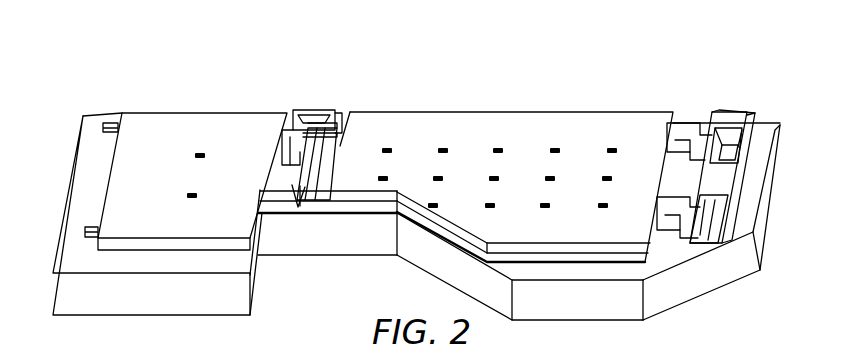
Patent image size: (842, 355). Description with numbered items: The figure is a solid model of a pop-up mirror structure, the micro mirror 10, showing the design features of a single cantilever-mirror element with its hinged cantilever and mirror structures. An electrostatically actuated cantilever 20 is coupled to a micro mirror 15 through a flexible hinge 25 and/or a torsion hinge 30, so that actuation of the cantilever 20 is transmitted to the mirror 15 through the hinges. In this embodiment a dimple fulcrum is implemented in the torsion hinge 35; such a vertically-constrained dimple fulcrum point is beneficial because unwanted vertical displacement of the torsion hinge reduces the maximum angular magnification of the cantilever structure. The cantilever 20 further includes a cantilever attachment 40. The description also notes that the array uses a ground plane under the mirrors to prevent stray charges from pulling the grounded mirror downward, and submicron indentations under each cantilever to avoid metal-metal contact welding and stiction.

The micro mirror 10 is at (584, 66).
The micro mirror 15 is at (152, 118).
The electrostatically actuated cantilever 20 is at (490, 120).
The flexible hinge 25 is at (340, 138).
The torsion hinge 30 is at (307, 108).
The torsion hinge 35 is at (302, 210).
The cantilever attachment 40 is at (723, 110).